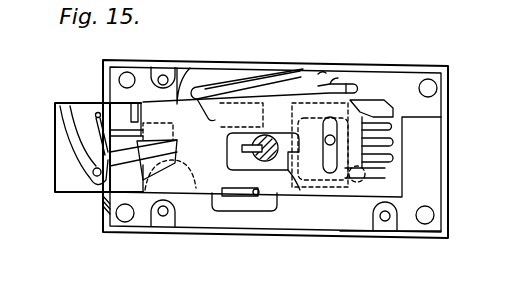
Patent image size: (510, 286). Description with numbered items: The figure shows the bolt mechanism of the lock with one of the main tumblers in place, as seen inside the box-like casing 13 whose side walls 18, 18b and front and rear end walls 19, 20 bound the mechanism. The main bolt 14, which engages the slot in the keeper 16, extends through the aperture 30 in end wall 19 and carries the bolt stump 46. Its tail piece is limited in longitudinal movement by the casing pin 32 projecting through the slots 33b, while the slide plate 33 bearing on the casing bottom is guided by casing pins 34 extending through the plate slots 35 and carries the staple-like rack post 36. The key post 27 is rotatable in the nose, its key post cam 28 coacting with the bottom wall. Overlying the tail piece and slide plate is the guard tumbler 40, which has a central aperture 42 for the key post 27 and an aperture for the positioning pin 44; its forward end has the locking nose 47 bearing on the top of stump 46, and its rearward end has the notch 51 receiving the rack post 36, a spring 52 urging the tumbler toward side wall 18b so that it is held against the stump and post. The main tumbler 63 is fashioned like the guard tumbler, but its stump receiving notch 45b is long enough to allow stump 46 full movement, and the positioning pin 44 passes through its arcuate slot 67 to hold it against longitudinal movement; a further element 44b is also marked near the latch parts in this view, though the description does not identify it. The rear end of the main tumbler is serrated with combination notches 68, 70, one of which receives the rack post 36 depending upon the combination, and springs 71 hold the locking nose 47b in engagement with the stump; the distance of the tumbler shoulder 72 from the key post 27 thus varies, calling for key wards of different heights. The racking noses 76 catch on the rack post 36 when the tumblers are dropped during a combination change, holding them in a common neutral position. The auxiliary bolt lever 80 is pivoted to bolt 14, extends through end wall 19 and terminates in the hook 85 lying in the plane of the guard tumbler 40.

The casing 13 is at (450, 63).
The main bolt 14 is at (78, 104).
The keeper 16 is at (263, 151).
The side wall 18 is at (281, 98).
The side wall 18b is at (360, 238).
The front end wall 19 is at (100, 205).
The rear end wall 20 is at (447, 173).
The key post 27 is at (277, 154).
The key post cam 28 is at (237, 129).
The aperture 30 is at (107, 103).
The casing pin 32 is at (357, 88).
The slide plate 33 is at (408, 151).
The slots 33b is at (347, 75).
The casing pins 34 is at (255, 196).
The plate slots 35 is at (237, 197).
The rack post 36 is at (390, 138).
The guard tumbler 40 is at (283, 113).
The central aperture 42 is at (302, 196).
The positioning pin 44 is at (332, 141).
The latch arm 44b is at (143, 143).
The stump receiving notches 45b is at (162, 127).
The bolt stump 46 is at (126, 147).
The locking nose 47 is at (128, 106).
The locking noses 47b is at (142, 103).
The notch 51 is at (197, 78).
The spring 52 is at (239, 92).
The main tumbler 63 is at (322, 70).
The arcuate tumbler slots 67 is at (338, 157).
The combination notch 68 is at (390, 126).
The combination notch 70 is at (378, 159).
The springs 71 is at (218, 93).
The tumbler shoulders 72 is at (262, 131).
The racking noses 76 is at (392, 106).
The lever 80 is at (88, 158).
The hook 85 is at (172, 184).